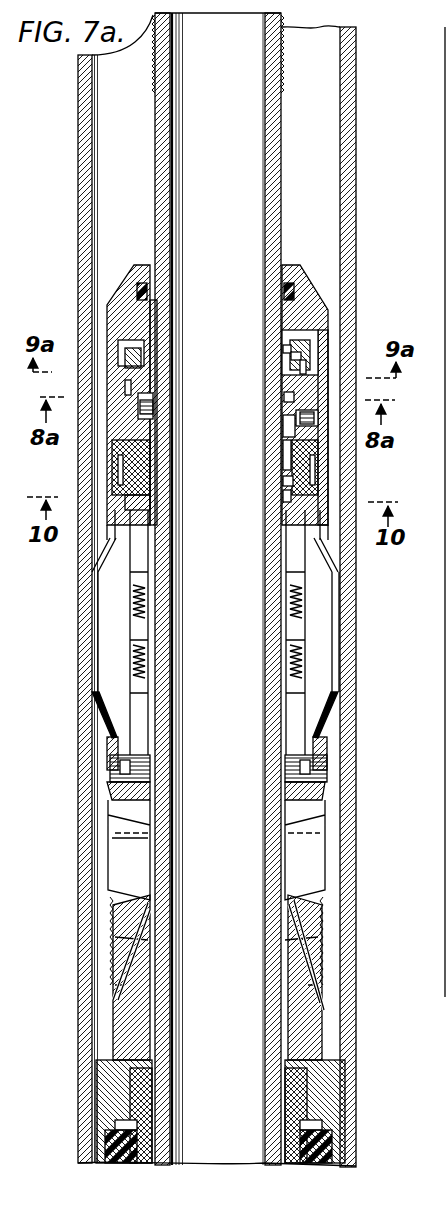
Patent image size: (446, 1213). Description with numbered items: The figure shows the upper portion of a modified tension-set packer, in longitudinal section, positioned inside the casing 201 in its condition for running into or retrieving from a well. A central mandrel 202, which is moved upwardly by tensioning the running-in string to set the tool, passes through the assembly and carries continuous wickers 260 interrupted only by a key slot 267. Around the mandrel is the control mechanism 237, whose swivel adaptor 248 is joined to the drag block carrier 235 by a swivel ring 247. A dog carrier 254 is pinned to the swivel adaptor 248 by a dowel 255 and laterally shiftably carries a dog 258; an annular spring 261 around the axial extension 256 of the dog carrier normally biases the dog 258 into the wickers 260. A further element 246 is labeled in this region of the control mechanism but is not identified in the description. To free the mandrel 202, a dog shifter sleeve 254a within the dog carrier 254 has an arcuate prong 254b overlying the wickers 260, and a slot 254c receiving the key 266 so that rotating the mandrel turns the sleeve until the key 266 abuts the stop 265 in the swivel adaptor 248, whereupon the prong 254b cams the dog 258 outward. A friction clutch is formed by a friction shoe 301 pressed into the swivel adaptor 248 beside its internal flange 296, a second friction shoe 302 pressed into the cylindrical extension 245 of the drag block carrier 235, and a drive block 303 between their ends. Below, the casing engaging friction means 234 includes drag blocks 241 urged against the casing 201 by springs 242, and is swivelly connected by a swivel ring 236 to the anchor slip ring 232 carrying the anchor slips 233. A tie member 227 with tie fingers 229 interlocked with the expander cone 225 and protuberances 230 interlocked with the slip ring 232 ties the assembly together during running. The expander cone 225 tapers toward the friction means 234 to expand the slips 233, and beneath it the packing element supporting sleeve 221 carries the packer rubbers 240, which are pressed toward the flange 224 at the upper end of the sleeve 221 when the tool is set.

The casing 201 is at (358, 672).
The mandrel 202 is at (283, 200).
The packing element supporting sleeve 221 is at (300, 1152).
The flange 224 is at (330, 1110).
The expander cone 225 is at (315, 1042).
The tie member 227 is at (150, 953).
The tie fingers 229 is at (150, 862).
The protuberances 230 is at (120, 796).
The anchor slip ring 232 is at (112, 786).
The anchor slips 233 is at (118, 917).
The casing engaging friction means 234 is at (342, 637).
The drag block carrier 235 is at (288, 560).
The swivel ring 236 is at (318, 762).
The control mechanism 237 is at (330, 372).
The packer rubbers 240 is at (113, 1150).
The drag blocks 241 is at (100, 660).
The springs 242 is at (133, 650).
The cylindrical extension 245 is at (290, 480).
The latch 246 is at (133, 470).
The swivel ring 247 is at (322, 483).
The swivel adaptor 248 is at (303, 440).
The dog carrier 254 is at (320, 385).
The dog shifter sleeve 254a is at (293, 398).
The arcuate prong 254b is at (283, 350).
The slot 254c is at (305, 372).
The dowel 255 is at (120, 388).
The axial extension 256 is at (292, 360).
The dog 258 is at (130, 348).
The wickers 260 is at (147, 325).
The annular spring 261 is at (315, 355).
The stop 265 is at (287, 424).
The key 266 is at (156, 410).
The key slot 267 is at (156, 452).
The internal flange 296 is at (288, 440).
The friction shoe 301 is at (287, 456).
The friction shoe 302 is at (288, 496).
The drive block 303 is at (145, 497).